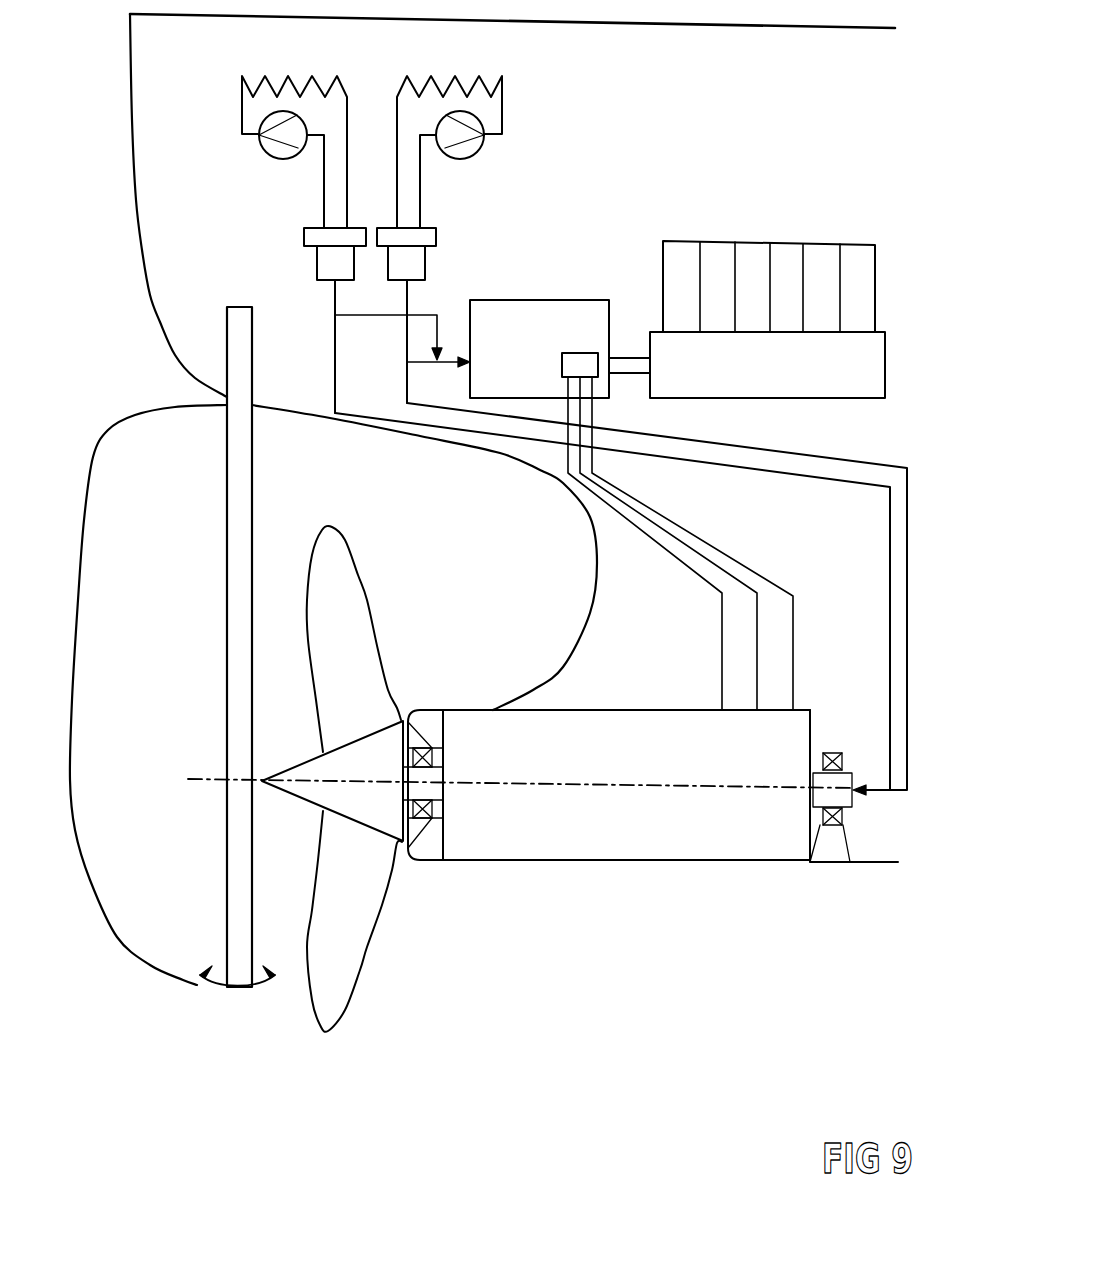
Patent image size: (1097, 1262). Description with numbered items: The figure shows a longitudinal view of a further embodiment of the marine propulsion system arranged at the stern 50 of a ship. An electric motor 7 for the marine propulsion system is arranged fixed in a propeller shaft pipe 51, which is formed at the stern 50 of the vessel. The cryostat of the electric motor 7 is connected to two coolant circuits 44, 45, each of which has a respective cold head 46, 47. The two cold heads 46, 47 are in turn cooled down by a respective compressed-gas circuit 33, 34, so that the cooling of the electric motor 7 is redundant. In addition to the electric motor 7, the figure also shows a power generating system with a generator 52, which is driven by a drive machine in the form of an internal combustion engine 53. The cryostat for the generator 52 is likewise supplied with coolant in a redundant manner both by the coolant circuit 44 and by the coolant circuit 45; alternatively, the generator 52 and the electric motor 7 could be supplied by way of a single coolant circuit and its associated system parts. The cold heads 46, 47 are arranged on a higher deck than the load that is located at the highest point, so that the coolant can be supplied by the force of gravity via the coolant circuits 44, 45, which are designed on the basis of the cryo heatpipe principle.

The electric motor 7 is at (732, 852).
The compressed-gas circuit 33 is at (242, 104).
The compressed-gas circuit 34 is at (504, 115).
The coolant circuit 44 is at (887, 543).
The coolant circuit 45 is at (882, 461).
The cold head 46 is at (304, 262).
The cold head 47 is at (426, 263).
The stern 50 is at (167, 330).
The propeller shaft pipe 51 is at (520, 862).
The generator 52 is at (565, 300).
The internal combustion engine 53 is at (815, 240).